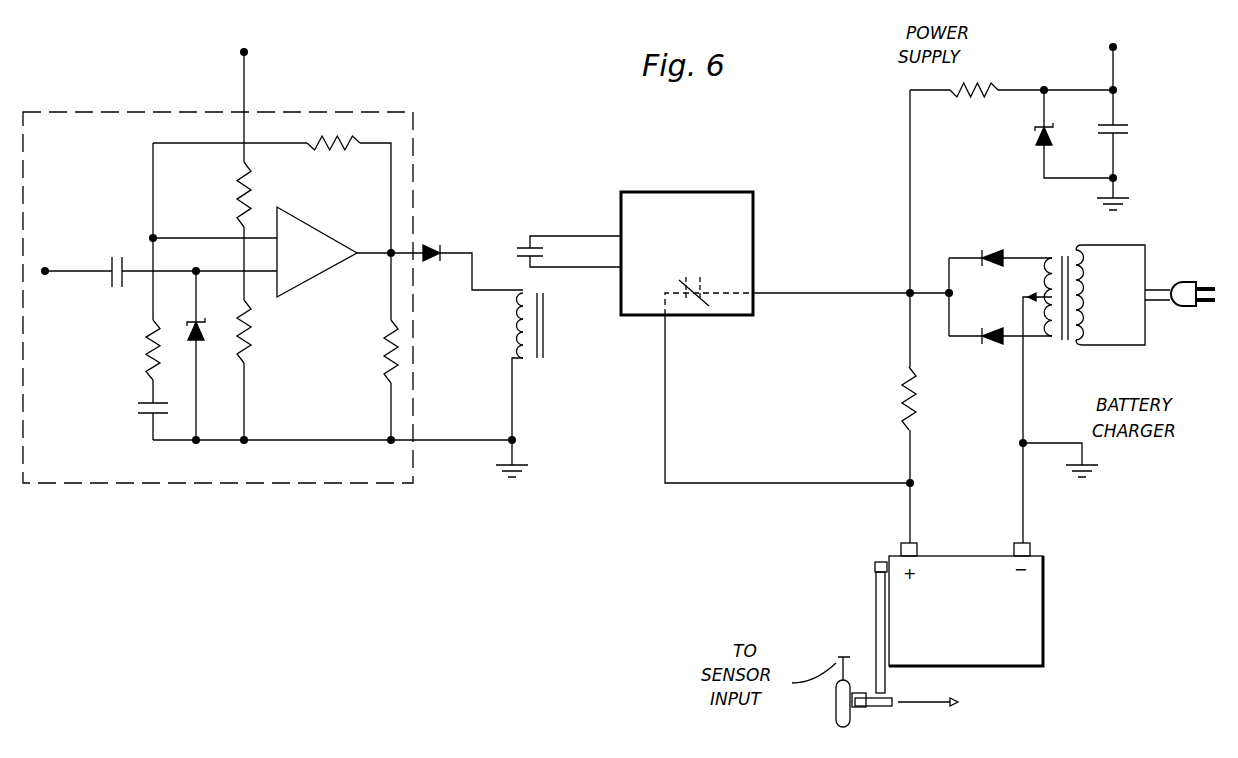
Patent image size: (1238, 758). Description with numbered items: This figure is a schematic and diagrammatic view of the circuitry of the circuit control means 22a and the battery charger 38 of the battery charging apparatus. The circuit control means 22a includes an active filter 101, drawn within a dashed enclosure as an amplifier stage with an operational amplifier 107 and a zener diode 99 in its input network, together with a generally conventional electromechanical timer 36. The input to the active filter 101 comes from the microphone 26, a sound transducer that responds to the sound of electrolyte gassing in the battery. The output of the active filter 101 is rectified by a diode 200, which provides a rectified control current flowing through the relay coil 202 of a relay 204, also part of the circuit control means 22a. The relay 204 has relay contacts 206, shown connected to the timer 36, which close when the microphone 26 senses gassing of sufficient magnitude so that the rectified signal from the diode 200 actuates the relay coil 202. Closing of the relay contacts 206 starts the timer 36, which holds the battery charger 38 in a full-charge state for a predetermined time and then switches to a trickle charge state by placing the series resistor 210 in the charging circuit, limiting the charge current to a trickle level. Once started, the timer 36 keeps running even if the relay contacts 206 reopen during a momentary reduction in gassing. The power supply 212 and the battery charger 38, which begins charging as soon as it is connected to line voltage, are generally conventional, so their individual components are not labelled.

The active filter 101 is at (430, 156).
The operational amplifier 107 is at (303, 226).
The zener diode 99 is at (207, 333).
The microphone 26 is at (152, 287).
The diode 200 is at (433, 246).
The relay coil 202 is at (513, 343).
The relay 204 is at (548, 342).
The relay contacts 206 is at (517, 250).
The circuit control means 22a is at (590, 183).
The timer 36 is at (745, 238).
The power supply 212 is at (1062, 84).
The series resistor 210 is at (915, 410).
The battery charger 38 is at (1057, 350).